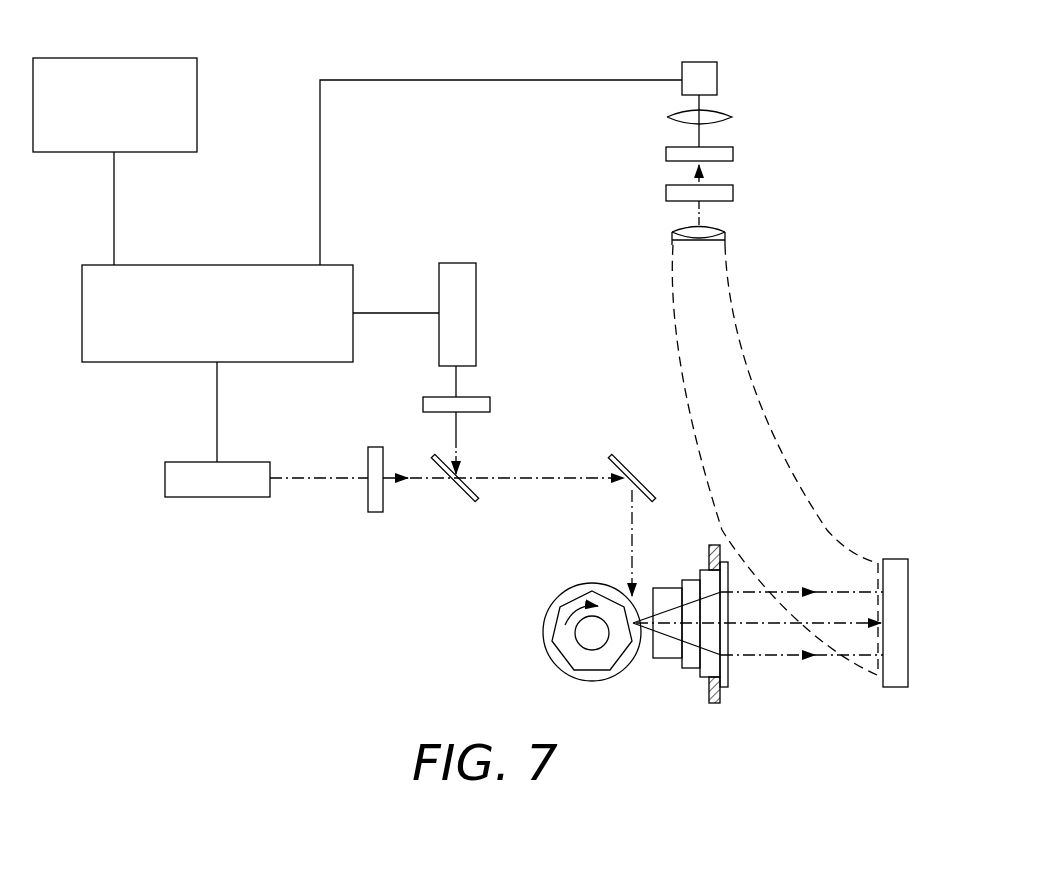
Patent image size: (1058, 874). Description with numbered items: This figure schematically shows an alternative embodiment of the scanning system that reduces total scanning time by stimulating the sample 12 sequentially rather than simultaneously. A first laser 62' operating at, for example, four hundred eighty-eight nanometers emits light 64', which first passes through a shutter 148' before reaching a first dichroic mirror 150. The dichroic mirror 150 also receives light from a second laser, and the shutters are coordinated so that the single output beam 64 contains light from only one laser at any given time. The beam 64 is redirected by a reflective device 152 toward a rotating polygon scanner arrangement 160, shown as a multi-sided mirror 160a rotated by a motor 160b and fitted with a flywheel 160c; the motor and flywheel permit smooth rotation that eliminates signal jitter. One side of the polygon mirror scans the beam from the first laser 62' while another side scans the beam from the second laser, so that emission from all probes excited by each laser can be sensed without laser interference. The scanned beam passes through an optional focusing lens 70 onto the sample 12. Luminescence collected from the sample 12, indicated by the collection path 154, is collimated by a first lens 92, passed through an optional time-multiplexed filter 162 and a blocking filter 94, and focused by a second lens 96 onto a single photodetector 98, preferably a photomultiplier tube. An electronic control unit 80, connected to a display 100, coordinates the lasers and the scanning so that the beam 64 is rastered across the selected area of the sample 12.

The display 100 is at (137, 58).
The electronic control unit 80 is at (167, 362).
The first laser 62' is at (200, 497).
The shutter 148' is at (340, 496).
The light from first laser 64' is at (345, 440).
The beam 64 is at (517, 510).
The first dichroic mirror 150 is at (465, 493).
The reflective device 152 is at (625, 463).
The rotating polygon scanner arrangement 160 is at (514, 622).
The multi-sided mirror 160a is at (567, 610).
The motor 160b is at (590, 642).
The flywheel 160c is at (573, 588).
The focusing lens 70 is at (692, 560).
The sample 12 is at (897, 559).
The collected emission light path 154 is at (747, 387).
The first lens 92 is at (715, 230).
The filter 162 is at (718, 185).
The blocking filter 94 is at (723, 147).
The second lens 96 is at (730, 117).
The photodetector 98 is at (702, 60).